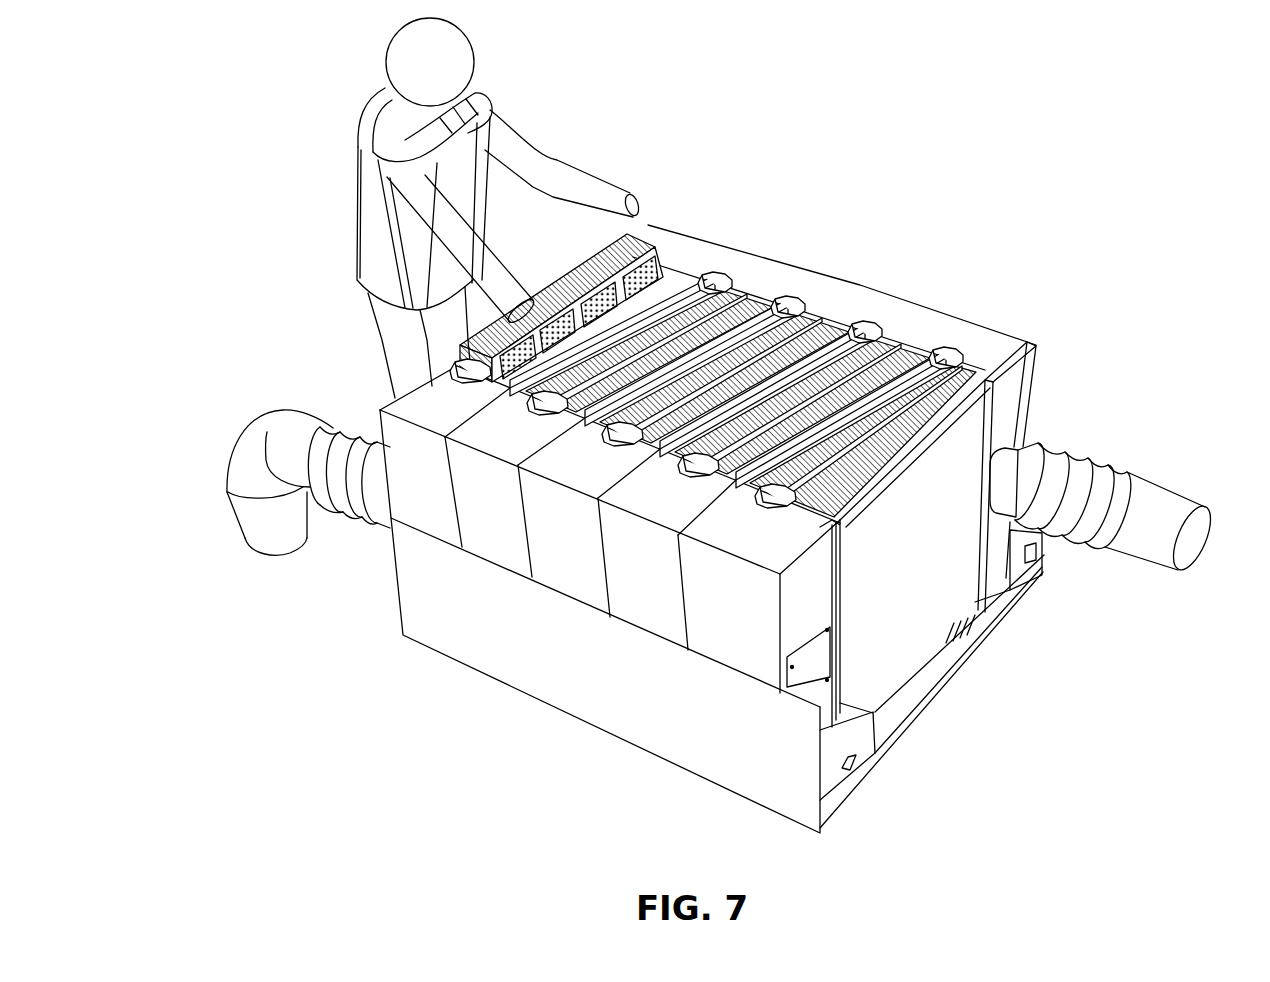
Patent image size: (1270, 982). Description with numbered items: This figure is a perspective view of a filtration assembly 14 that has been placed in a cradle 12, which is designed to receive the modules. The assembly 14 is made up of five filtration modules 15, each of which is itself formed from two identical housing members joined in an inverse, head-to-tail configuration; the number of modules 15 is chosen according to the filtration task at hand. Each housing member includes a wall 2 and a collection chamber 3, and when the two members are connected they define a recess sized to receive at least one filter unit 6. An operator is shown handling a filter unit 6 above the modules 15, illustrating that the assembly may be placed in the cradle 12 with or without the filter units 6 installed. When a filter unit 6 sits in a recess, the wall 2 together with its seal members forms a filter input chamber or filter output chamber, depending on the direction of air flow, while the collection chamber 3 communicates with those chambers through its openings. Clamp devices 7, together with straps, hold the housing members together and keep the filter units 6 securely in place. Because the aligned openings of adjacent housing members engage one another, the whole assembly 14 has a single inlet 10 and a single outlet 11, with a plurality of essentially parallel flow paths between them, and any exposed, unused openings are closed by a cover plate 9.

The filtration assembly 14 is at (949, 194).
The filter unit 6 is at (640, 233).
The clamp device 7 is at (722, 278).
The filtration module 15 is at (827, 282).
The collection chamber 3 is at (1004, 343).
The cover plate 9 is at (803, 685).
The cradle 12 is at (565, 678).
The wall 2 is at (900, 643).
The inlet 10 is at (1160, 499).
The outlet 11 is at (226, 466).